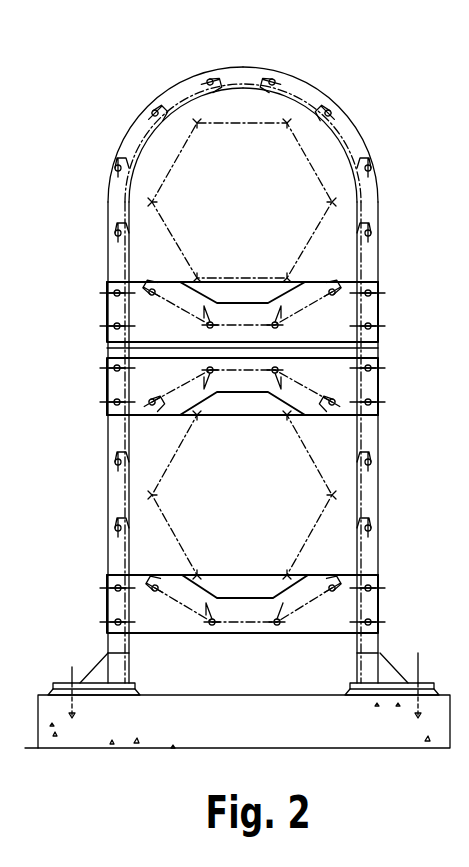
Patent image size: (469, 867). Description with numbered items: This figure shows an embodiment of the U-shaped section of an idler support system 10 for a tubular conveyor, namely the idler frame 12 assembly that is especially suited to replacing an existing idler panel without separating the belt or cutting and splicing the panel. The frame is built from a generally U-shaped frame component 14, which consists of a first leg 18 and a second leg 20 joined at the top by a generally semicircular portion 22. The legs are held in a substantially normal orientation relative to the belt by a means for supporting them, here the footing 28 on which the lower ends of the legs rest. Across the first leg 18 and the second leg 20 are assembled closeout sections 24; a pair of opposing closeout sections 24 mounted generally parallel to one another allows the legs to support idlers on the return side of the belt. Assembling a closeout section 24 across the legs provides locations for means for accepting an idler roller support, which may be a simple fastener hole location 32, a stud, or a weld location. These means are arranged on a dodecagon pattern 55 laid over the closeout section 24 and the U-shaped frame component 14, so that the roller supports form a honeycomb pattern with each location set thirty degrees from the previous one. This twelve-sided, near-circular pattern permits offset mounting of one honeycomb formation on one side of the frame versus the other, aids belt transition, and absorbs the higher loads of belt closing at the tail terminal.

The idler support system 10 is at (413, 507).
The idler frame 12 is at (157, 59).
The U-shaped frame component 14 is at (380, 205).
The first leg 18 is at (108, 472).
The second leg 20 is at (378, 446).
The semicircular portion 22 is at (253, 68).
The closeout section 24 is at (378, 258).
The footing 28 is at (380, 748).
The fastener hole location 32 is at (108, 287).
The dodecagon pattern 55 is at (303, 97).